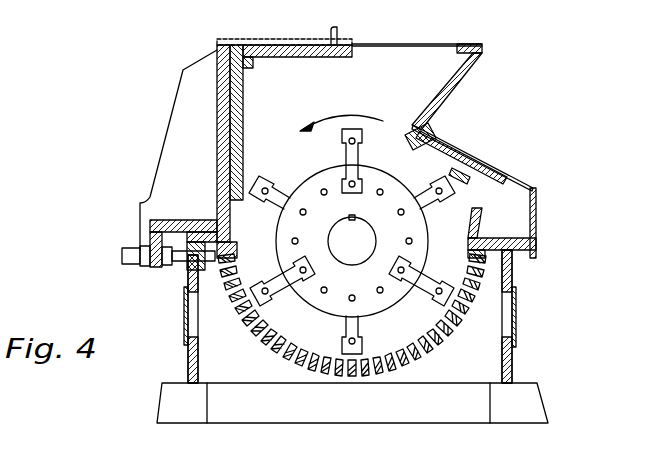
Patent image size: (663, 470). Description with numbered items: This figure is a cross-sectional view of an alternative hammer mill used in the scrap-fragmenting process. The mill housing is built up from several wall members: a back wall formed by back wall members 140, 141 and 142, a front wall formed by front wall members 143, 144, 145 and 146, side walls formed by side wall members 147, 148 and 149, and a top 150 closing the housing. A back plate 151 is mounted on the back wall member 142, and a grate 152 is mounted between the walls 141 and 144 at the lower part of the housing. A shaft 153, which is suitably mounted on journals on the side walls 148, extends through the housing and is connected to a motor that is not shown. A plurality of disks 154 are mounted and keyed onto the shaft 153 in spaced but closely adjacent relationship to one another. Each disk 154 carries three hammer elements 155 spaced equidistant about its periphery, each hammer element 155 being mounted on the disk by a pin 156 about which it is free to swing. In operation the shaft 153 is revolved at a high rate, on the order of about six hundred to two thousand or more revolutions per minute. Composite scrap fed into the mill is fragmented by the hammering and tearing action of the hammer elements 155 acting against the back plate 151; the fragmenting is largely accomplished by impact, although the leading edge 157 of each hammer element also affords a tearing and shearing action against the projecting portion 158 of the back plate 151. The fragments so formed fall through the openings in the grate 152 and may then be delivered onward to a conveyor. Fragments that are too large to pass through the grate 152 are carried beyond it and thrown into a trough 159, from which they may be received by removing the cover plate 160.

The back wall member 140 is at (172, 403).
The back wall member 141 is at (190, 360).
The back wall member 142 is at (217, 113).
The front wall member 143 is at (525, 410).
The front wall member 144 is at (515, 370).
The front wall member 145 is at (517, 175).
The front wall member 146 is at (458, 70).
The side wall member 147 is at (265, 70).
The side wall member 148 is at (213, 313).
The side wall member 149 is at (245, 400).
The top 150 is at (303, 43).
The back plate 151 is at (222, 72).
The grate 152 is at (287, 346).
The shaft 153 is at (365, 240).
The disk 154 is at (377, 182).
The hammer element 155 is at (343, 162).
The pin 156 is at (308, 268).
The leading edge 157 is at (252, 200).
The projecting portion 158 is at (254, 175).
The trough 159 is at (505, 228).
The cover plate 160 is at (537, 217).